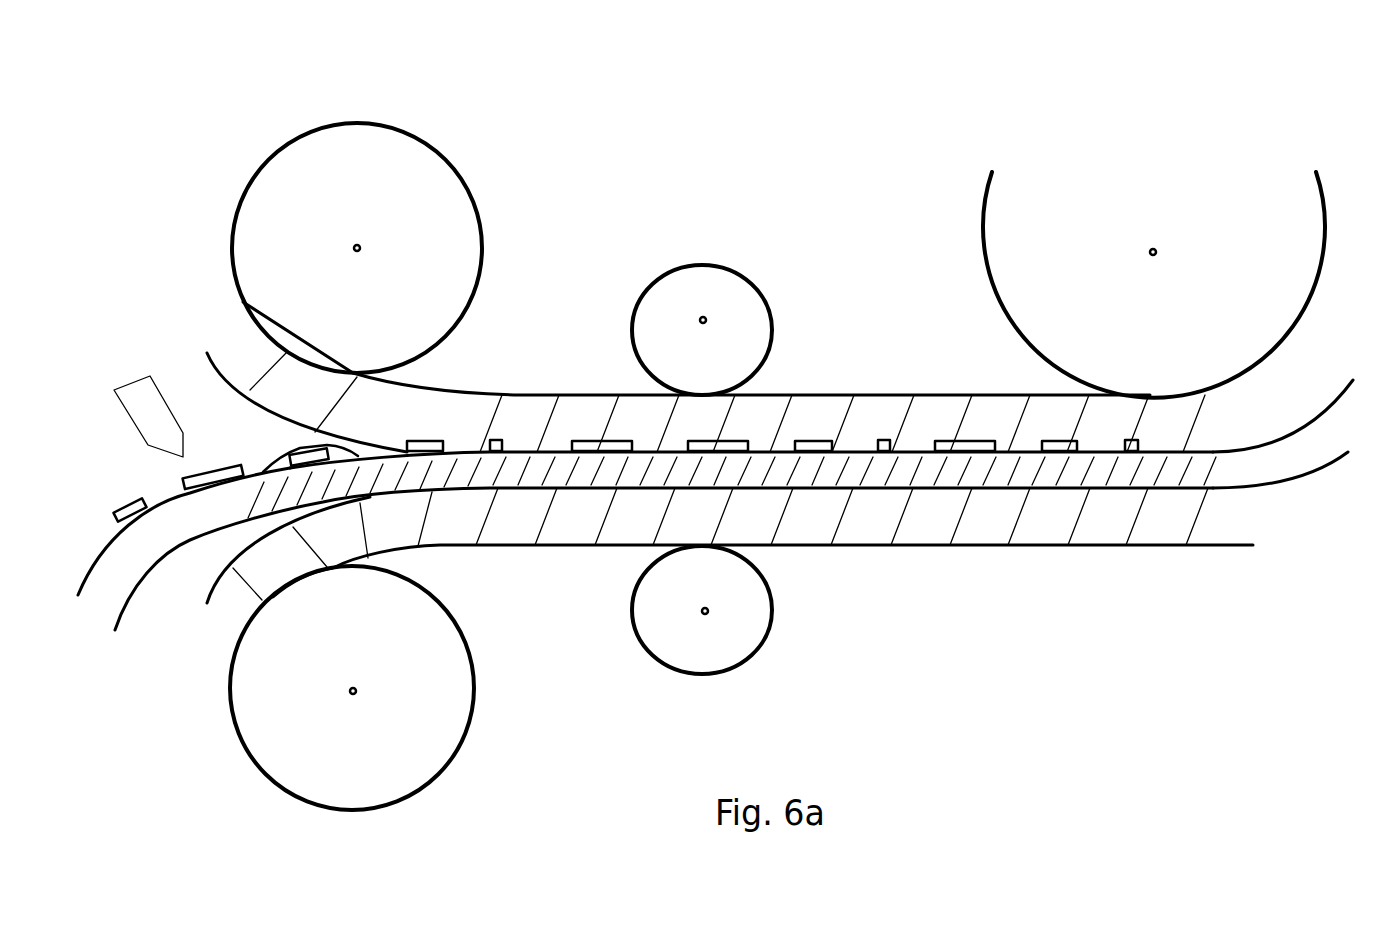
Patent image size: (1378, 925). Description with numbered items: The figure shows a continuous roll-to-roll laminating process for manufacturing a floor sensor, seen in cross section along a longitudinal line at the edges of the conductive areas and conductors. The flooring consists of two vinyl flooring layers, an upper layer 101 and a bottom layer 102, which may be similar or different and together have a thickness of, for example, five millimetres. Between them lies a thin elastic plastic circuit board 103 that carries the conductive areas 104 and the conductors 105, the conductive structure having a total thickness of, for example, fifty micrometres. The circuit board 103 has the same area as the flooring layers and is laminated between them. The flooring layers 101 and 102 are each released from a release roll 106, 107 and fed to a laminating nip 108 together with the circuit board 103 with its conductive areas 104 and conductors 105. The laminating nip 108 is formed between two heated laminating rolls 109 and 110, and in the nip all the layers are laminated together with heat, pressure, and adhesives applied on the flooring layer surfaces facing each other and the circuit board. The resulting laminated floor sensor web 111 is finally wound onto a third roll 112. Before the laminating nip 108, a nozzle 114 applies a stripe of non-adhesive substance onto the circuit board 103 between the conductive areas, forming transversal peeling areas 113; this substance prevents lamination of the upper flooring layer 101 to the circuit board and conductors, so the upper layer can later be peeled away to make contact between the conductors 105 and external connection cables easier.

The upper layer 101 is at (417, 410).
The bottom layer 102 is at (467, 507).
The elastic plastic circuit board 103 is at (207, 513).
The conductive areas 104 is at (210, 468).
The conductors 105 is at (405, 448).
The release roll 106 is at (350, 215).
The release roll 107 is at (415, 708).
The laminating nip 108 is at (762, 383).
The heated laminating roll 109 is at (721, 296).
The heated laminating roll 110 is at (724, 619).
The laminated floor sensor web 111 is at (948, 513).
The third roll 112 is at (1253, 287).
The transversal peeling areas 113 is at (268, 470).
The nozzle 114 is at (147, 406).